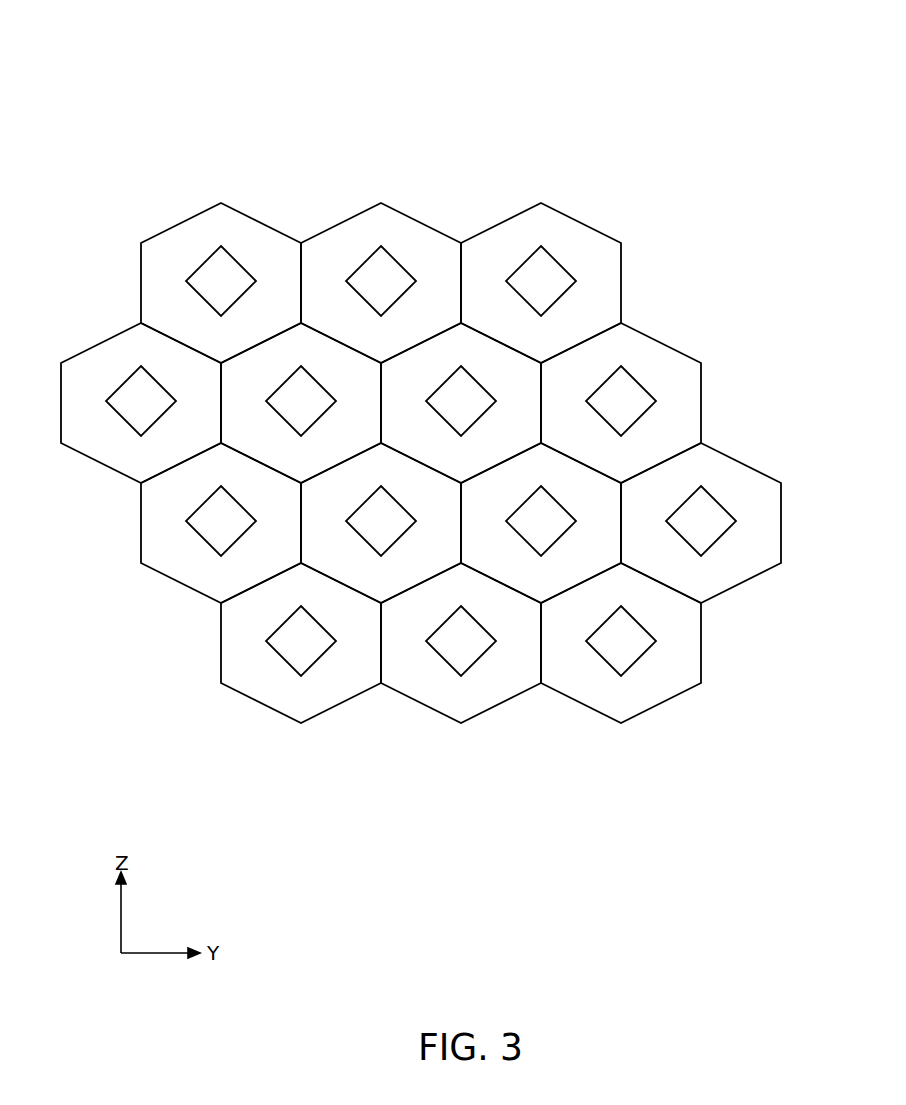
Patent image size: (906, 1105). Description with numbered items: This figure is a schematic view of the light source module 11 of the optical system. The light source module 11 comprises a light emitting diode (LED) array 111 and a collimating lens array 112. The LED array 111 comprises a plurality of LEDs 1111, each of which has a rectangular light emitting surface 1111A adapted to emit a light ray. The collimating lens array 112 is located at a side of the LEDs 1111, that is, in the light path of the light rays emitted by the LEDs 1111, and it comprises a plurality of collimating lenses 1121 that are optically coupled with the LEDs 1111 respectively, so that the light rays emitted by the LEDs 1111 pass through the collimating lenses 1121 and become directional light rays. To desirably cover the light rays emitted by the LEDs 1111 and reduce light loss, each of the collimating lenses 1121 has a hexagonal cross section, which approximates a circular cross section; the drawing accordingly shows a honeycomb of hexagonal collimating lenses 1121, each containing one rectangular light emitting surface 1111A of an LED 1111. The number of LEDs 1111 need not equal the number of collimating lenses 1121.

The light source module 11 is at (142, 43).
The light emitting diode (LED) array 111 is at (285, 662).
The LED 1111 is at (212, 533).
The rectangular light emitting surface 1111A is at (457, 655).
The collimating lens array 112 is at (255, 220).
The collimating lens 1121 is at (512, 235).